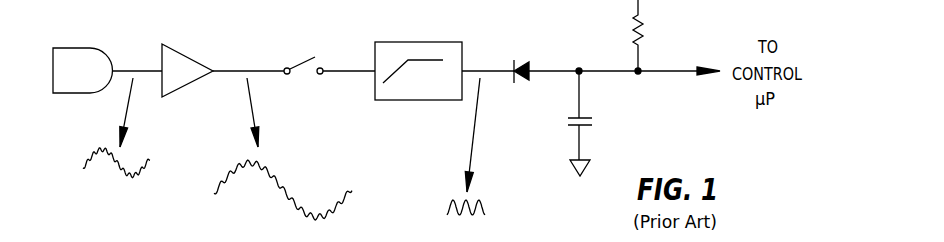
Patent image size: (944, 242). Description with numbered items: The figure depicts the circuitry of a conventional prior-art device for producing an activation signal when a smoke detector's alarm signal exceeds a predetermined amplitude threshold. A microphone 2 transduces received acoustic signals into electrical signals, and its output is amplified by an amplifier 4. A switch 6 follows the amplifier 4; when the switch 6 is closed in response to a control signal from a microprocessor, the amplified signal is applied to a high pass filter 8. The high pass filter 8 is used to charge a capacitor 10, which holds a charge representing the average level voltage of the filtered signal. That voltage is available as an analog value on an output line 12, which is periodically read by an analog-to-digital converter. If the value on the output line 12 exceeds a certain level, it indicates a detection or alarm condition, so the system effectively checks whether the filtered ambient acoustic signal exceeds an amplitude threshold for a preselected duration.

The microphone 2 is at (87, 48).
The amplifier 4 is at (183, 55).
The switch 6 is at (305, 62).
The high pass filter 8 is at (443, 42).
The capacitor 10 is at (566, 121).
The output line 12 is at (639, 76).